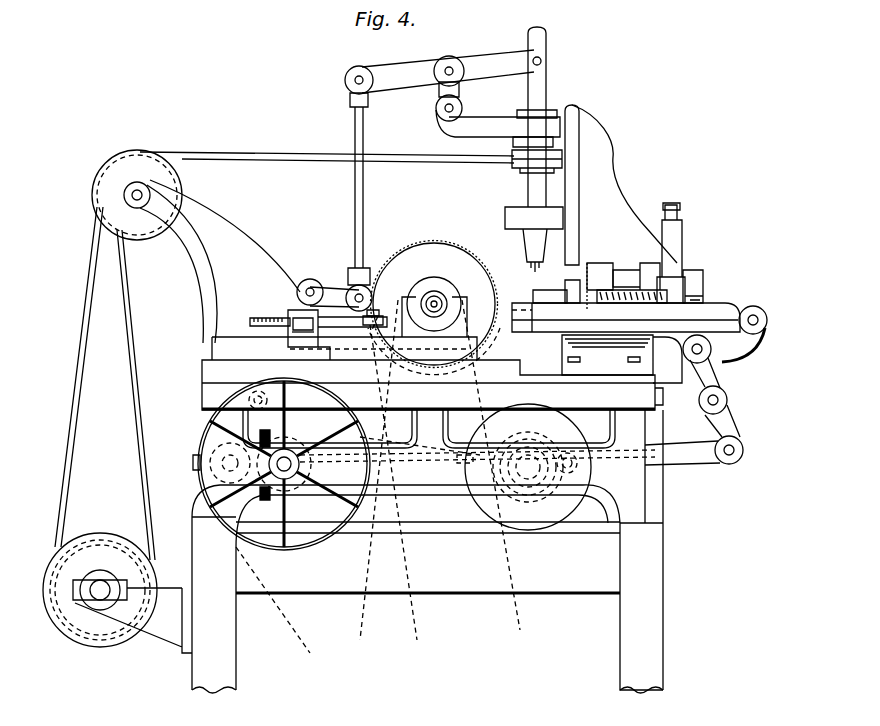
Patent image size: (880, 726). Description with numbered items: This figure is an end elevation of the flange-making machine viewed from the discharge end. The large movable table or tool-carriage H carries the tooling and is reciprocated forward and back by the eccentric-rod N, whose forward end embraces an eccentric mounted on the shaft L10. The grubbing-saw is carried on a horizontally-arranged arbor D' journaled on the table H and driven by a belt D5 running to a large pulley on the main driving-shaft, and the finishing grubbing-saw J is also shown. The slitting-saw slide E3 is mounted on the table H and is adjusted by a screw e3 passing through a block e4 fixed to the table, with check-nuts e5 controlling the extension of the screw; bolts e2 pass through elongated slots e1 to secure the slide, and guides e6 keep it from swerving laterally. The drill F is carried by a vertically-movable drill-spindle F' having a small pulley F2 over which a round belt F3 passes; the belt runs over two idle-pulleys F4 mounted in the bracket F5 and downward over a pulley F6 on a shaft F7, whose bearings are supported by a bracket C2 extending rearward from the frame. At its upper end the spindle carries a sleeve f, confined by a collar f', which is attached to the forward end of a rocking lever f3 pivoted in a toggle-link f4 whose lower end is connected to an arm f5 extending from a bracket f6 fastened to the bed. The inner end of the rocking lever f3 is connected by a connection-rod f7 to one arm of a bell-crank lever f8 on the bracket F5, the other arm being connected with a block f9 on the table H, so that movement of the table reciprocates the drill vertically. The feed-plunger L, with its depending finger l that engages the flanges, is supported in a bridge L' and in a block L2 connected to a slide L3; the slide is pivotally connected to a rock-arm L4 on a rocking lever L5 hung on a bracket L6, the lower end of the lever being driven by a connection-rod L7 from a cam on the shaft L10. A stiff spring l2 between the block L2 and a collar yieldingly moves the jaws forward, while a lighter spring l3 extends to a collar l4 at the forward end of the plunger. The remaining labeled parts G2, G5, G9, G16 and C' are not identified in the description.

The collar f' is at (546, 115).
The sleeve f is at (548, 54).
The rocking lever f3 is at (488, 59).
The toggle-link f4 is at (450, 56).
The arm f5 is at (496, 117).
The bracket f6 is at (618, 178).
The connection-rod f7 is at (355, 128).
The bell-crank lever f8 is at (356, 286).
The block f9 is at (309, 279).
The drill F is at (525, 271).
The drill-spindle F' is at (525, 222).
The small pulley F2 is at (514, 168).
The round belt F3 is at (303, 160).
The idle-pulleys F4 is at (137, 195).
The bracket F5 is at (250, 262).
The pulley F6 is at (58, 566).
The shaft F7 is at (90, 593).
The post G9 is at (682, 228).
The handwheel G16 is at (209, 433).
The gear G5 is at (200, 483).
The pawl G2 is at (264, 445).
The shaft L10 is at (477, 441).
The eccentric-rod N is at (382, 448).
The belt D5 is at (510, 581).
The movable table H is at (232, 357).
The check-nuts e5 is at (295, 310).
The adjusting screw e3 is at (265, 318).
The block e4 is at (303, 341).
The slide E3 is at (340, 327).
The guides e6 is at (323, 360).
The bolts e2 is at (379, 310).
The elongated slots e1 is at (375, 316).
The finishing grubbing-saw J is at (434, 308).
The arbor D' is at (434, 301).
The feed-plunger L is at (626, 324).
The depending finger l is at (533, 298).
The bridge L' is at (571, 283).
The movable collar l4 is at (590, 263).
The light spiral spring l3 is at (632, 270).
The stiff spiral spring l2 is at (703, 293).
The block L2 is at (706, 300).
The slide L3 is at (747, 306).
The rock-arm L4 is at (748, 350).
The rocking lever L5 is at (718, 377).
The bracket L6 is at (699, 399).
The connection-rod L7 is at (687, 453).
The legs C' is at (427, 605).
The bracket C2 is at (133, 620).